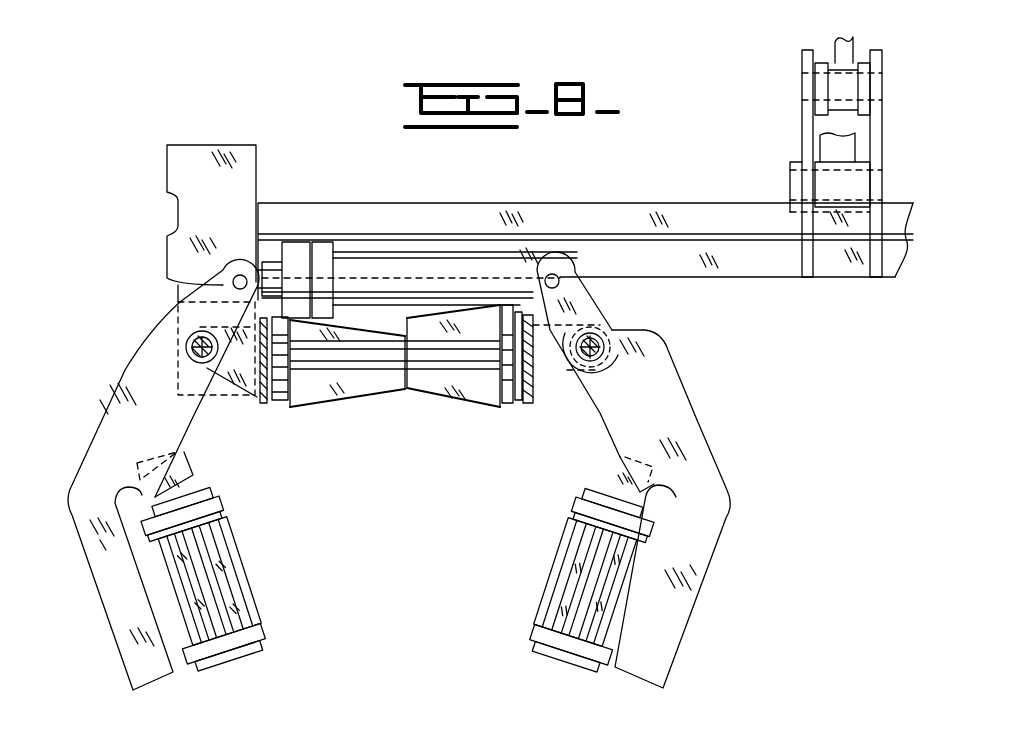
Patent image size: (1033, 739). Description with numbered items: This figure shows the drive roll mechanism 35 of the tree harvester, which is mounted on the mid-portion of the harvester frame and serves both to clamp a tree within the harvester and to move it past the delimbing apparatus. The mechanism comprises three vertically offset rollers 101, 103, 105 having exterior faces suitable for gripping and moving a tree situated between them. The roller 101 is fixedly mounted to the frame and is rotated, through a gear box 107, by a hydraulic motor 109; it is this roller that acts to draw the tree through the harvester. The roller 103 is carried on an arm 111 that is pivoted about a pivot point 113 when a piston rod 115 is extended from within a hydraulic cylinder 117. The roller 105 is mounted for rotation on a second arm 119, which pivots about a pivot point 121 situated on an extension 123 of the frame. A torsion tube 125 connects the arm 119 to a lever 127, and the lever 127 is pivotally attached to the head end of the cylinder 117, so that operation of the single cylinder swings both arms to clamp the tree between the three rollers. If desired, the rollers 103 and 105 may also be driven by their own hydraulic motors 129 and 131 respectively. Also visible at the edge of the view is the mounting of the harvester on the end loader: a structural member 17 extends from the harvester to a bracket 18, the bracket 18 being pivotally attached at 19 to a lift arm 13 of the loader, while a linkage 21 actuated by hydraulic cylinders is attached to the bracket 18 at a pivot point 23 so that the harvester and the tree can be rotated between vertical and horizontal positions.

The lift arm 13 is at (825, 142).
The structural member 17 is at (627, 205).
The bracket 18 is at (802, 115).
The pivot attachment 19 is at (795, 181).
The linkage 21 is at (838, 50).
The pivot point 23 is at (800, 85).
The drive roll mechanism 35 is at (725, 351).
The roller 101 is at (332, 396).
The roller 103 is at (232, 582).
The roller 105 is at (567, 564).
The gear box 107 is at (218, 392).
The hydraulic motor 109 is at (205, 150).
The arm 111 is at (108, 427).
The pivot point 113 is at (198, 347).
The piston rod 115 is at (263, 258).
The hydraulic cylinder 117 is at (462, 258).
The arm 119 is at (698, 440).
The pivot point 121 is at (600, 338).
The extension 123 is at (548, 385).
The torsion tube 125 is at (598, 377).
The lever 127 is at (590, 302).
The hydraulic motor 129 is at (186, 490).
The hydraulic motor 131 is at (612, 478).